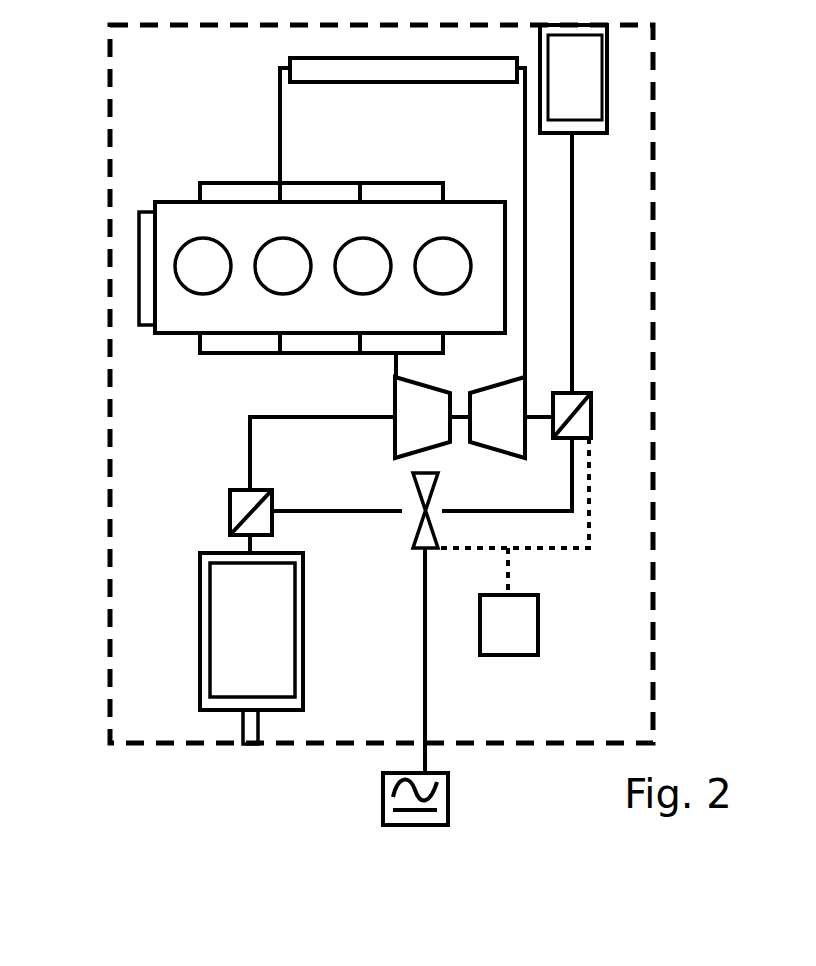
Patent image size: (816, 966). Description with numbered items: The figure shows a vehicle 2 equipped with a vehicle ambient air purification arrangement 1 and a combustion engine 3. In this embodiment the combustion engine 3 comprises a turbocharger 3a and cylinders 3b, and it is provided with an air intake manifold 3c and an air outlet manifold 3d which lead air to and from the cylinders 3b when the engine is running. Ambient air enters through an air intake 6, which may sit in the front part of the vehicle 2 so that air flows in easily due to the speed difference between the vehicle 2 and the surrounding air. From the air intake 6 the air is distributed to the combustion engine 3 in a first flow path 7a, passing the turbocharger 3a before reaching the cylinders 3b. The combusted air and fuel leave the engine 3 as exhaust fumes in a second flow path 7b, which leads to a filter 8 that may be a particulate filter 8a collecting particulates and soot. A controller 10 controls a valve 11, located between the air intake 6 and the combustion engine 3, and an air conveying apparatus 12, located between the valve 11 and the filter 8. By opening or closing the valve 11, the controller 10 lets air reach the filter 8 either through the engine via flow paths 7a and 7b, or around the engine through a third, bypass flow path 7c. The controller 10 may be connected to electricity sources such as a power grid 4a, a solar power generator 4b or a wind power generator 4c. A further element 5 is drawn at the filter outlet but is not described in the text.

The vehicle ambient air purification arrangement 1 is at (626, 617).
The vehicle 2 is at (665, 253).
The combustion engine 3 is at (183, 163).
The turbocharger 3a is at (460, 417).
The cylinders 3b is at (176, 301).
The air intake manifold 3c is at (398, 183).
The air outlet manifold 3d is at (231, 354).
The power grid 4a is at (313, 799).
The solar power generator 4b is at (313, 799).
The wind power generator 4c is at (370, 797).
The fuel supply line 5 is at (243, 738).
The air intake 6 is at (607, 148).
The first flow path 7a is at (540, 395).
The second flow path 7b is at (338, 420).
The third flow path 7c is at (323, 513).
The filter 8 is at (251, 631).
The particulate filter 8a is at (251, 631).
The controller 10 is at (513, 546).
The valve 11 is at (591, 422).
The air conveying apparatus 12 is at (413, 535).